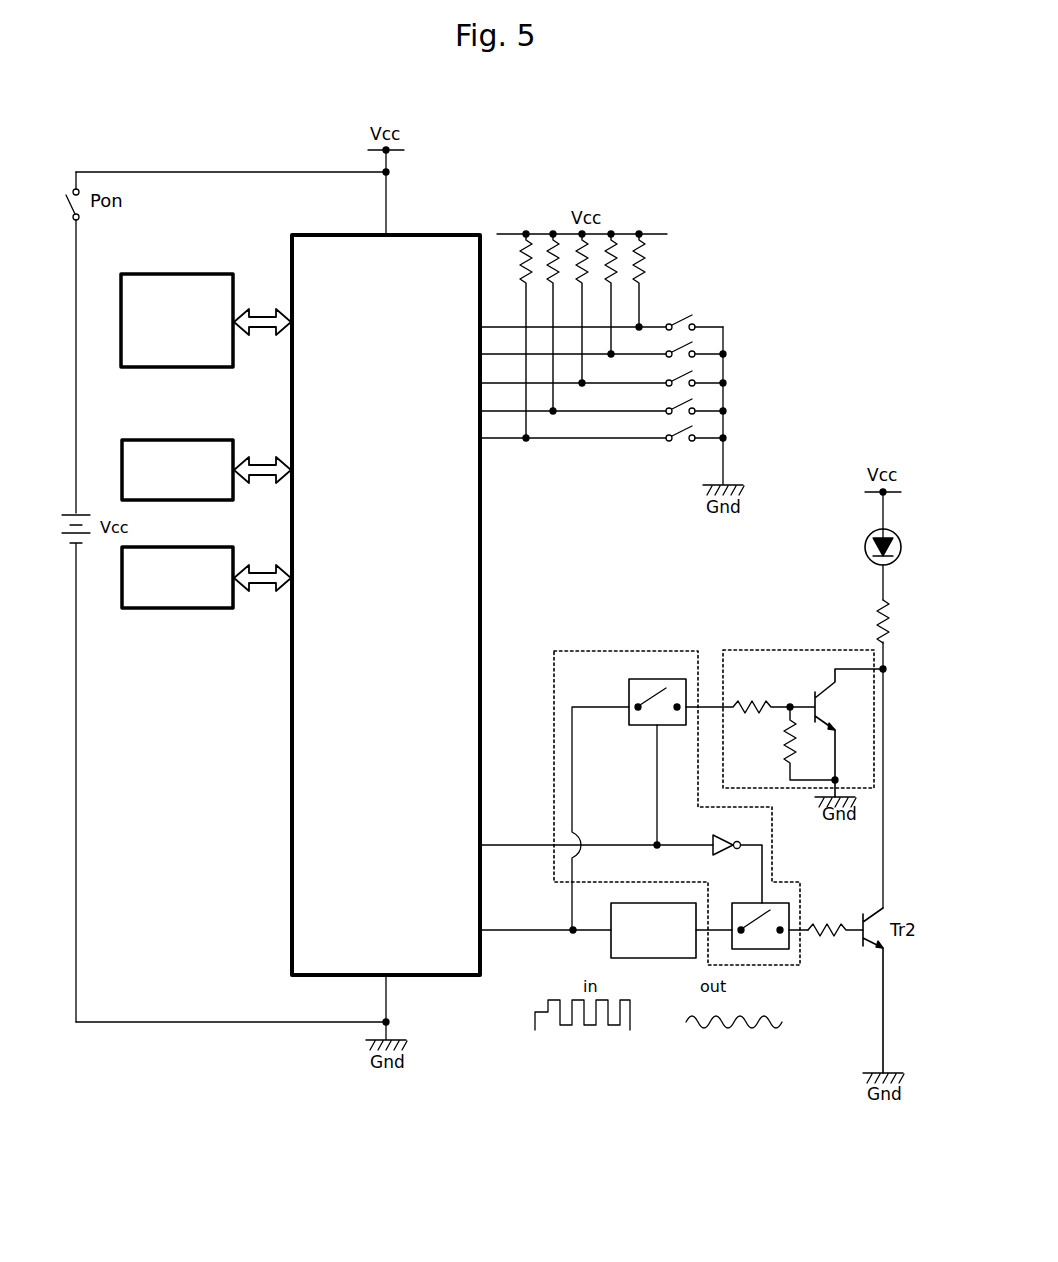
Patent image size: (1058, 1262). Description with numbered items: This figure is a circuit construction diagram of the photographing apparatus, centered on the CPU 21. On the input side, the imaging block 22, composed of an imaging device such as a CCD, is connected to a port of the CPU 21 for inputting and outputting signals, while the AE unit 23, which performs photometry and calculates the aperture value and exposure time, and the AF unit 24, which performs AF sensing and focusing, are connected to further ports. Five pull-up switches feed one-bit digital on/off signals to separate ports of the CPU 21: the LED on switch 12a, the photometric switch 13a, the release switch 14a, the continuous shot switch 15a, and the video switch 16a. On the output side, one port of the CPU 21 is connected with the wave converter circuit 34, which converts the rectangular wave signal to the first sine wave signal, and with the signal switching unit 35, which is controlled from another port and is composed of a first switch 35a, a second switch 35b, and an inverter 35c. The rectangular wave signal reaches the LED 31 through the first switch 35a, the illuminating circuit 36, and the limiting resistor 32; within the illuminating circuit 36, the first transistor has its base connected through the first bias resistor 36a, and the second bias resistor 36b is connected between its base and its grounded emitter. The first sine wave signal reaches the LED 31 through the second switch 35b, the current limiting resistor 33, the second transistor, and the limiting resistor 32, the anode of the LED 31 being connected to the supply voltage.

The CPU 21 is at (479, 233).
The imaging block 22 is at (230, 274).
The AE unit 23 is at (230, 440).
The AF unit 24 is at (230, 549).
The LED on switch 12a is at (700, 316).
The photometric switch 13a is at (700, 343).
The release switch 14a is at (700, 372).
The continuous shot switch 15a is at (700, 400).
The video switch 16a is at (700, 427).
The LED 31 is at (866, 543).
The limiting resistor 32 is at (878, 613).
The current limiting resistor 33 is at (813, 918).
The wave converter circuit 34 is at (611, 922).
The signal switching unit 35 is at (558, 652).
The first switch 35a is at (628, 692).
The second switch 35b is at (750, 902).
The inverter 35c is at (717, 843).
The illuminating circuit 36 is at (728, 651).
The first bias resistor 36a is at (755, 706).
The second bias resistor 36b is at (788, 753).